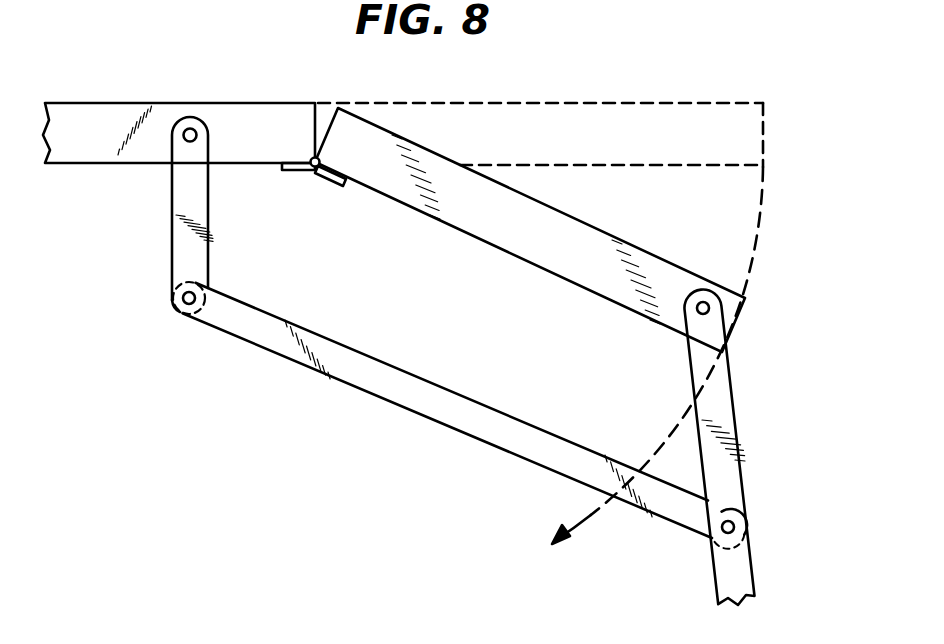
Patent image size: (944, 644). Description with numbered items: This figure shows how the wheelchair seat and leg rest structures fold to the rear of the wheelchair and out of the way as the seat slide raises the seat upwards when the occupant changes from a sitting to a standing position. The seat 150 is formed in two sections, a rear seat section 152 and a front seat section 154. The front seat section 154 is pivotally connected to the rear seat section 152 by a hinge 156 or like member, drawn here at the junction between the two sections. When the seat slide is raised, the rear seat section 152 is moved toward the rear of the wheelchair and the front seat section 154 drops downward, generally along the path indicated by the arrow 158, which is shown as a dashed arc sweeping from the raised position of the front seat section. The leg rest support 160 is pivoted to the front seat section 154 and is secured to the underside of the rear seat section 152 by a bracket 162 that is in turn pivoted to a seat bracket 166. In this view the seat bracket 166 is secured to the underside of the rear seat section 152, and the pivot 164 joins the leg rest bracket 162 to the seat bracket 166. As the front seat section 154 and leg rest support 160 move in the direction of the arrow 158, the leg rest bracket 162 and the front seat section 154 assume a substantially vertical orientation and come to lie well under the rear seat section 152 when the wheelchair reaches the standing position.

The seat 150 is at (155, 80).
The rear seat section 152 is at (93, 153).
The front seat section 154 is at (527, 127).
The hinge 156 is at (312, 178).
The arrow 158 is at (580, 520).
The leg rest support 160 is at (733, 421).
The bracket 162 is at (502, 423).
The pivot pin 164 is at (178, 307).
The seat bracket 166 is at (180, 230).